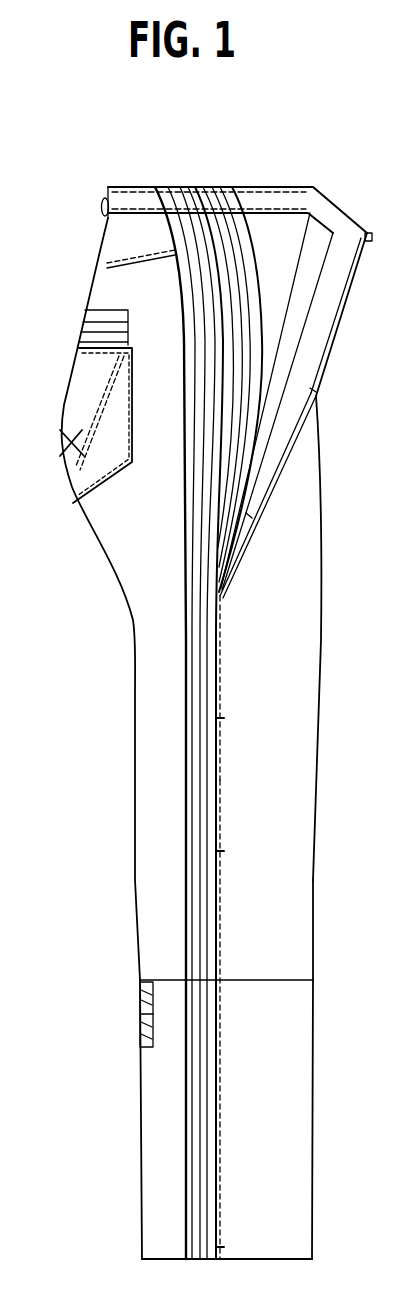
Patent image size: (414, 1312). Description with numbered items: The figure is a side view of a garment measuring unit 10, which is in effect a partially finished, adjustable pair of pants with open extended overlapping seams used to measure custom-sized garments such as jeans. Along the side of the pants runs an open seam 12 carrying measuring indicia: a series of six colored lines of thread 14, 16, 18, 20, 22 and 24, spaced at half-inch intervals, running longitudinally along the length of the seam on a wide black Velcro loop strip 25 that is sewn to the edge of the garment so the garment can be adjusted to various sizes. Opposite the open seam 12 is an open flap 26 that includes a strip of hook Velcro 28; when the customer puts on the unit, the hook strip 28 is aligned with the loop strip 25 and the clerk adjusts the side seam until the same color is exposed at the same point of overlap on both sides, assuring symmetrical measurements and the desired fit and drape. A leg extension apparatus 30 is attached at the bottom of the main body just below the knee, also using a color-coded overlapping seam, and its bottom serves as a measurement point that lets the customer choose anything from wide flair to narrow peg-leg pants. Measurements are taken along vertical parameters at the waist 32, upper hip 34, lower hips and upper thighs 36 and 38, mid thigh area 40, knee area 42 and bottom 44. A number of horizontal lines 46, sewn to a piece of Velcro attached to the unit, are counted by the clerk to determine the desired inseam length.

The measuring unit 10 is at (60, 373).
The open seam 12 is at (237, 180).
The thread line 14 is at (163, 187).
The thread line 16 is at (172, 187).
The thread line 18 is at (183, 187).
The thread line 20 is at (193, 187).
The thread line 22 is at (208, 187).
The thread line 24 is at (215, 187).
The Velcro loop strip 25 is at (183, 498).
The open flap 26 is at (310, 348).
The hook Velcro strip 28 is at (372, 233).
The leg extension apparatus 30 is at (320, 1183).
The waist measurement point 32 is at (366, 241).
The upper hip measurement point 34 is at (351, 288).
The lower hip measurement point 36 is at (314, 393).
The upper thigh measurement point 38 is at (265, 527).
The mid thigh measurement point 40 is at (243, 718).
The knee measurement point 42 is at (237, 851).
The bottom measurement point 44 is at (233, 1247).
The horizontal lines 46 is at (142, 998).